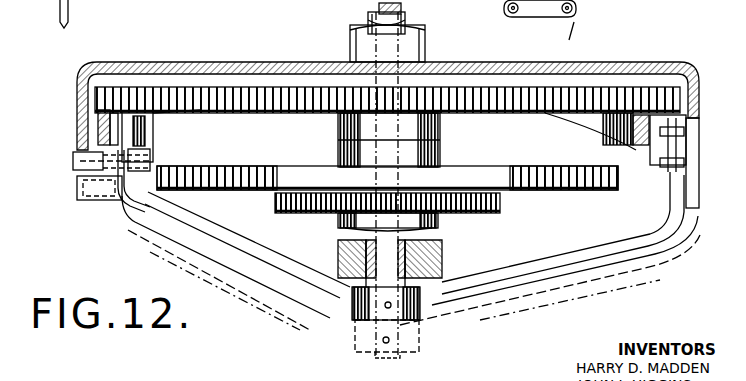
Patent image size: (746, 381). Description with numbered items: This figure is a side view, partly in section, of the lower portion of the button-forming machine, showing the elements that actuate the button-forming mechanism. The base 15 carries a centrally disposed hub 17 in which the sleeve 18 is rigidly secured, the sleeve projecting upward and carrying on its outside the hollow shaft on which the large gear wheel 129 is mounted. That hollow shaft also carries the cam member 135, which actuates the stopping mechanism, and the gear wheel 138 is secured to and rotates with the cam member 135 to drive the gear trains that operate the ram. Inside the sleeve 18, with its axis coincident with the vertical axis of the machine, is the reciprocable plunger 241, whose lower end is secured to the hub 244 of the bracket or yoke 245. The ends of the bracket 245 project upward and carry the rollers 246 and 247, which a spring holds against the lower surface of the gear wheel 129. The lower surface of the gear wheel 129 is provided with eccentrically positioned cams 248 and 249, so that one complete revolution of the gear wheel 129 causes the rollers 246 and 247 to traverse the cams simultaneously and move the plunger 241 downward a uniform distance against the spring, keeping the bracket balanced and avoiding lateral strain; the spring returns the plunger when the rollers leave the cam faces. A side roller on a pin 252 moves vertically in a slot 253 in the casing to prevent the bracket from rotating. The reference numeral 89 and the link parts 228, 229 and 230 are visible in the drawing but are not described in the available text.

The base 15 is at (101, 202).
The hub 17 is at (425, 40).
The sleeve 18 is at (372, 22).
The lever fragment 89 is at (83, 14).
The large gear wheel 129 is at (563, 113).
The cam member 135 is at (527, 166).
The gear wheel 138 is at (500, 204).
The link 228 is at (523, 10).
The pivot pin 229 is at (518, 12).
The pivot pin 230 is at (578, 9).
The plunger 241 is at (402, 7).
The hub 244 is at (362, 318).
The bracket 245 is at (480, 275).
The roller 246 is at (148, 133).
The roller 247 is at (688, 133).
The cam 248 is at (97, 125).
The cam 249 is at (640, 146).
The pin 252 is at (72, 161).
The slot 253 is at (84, 187).